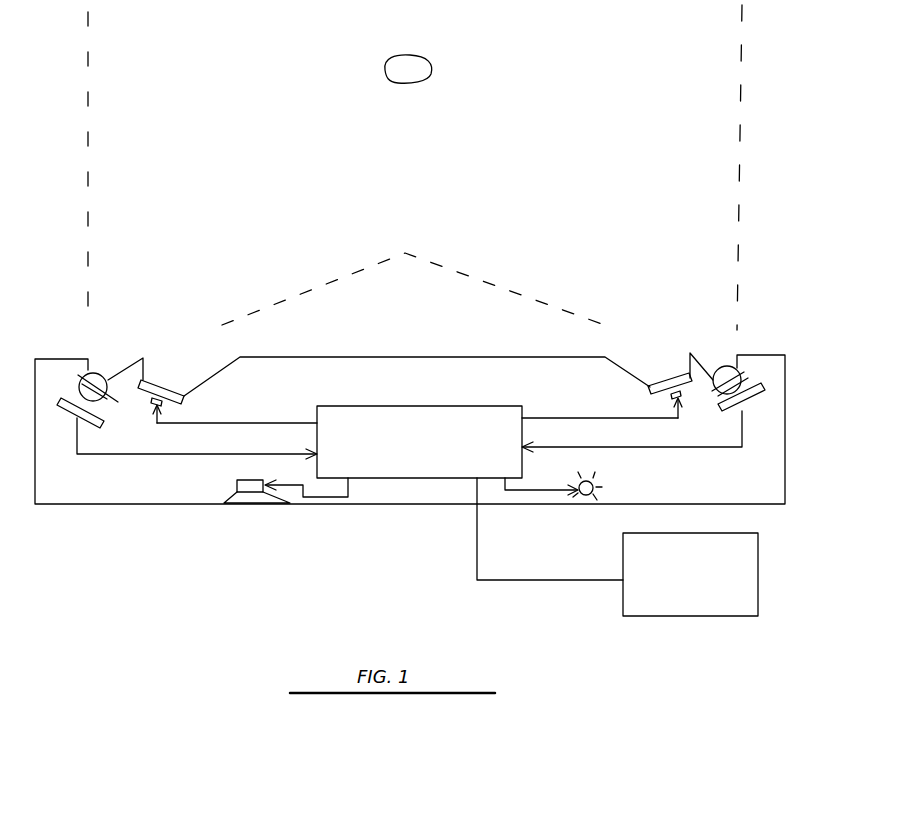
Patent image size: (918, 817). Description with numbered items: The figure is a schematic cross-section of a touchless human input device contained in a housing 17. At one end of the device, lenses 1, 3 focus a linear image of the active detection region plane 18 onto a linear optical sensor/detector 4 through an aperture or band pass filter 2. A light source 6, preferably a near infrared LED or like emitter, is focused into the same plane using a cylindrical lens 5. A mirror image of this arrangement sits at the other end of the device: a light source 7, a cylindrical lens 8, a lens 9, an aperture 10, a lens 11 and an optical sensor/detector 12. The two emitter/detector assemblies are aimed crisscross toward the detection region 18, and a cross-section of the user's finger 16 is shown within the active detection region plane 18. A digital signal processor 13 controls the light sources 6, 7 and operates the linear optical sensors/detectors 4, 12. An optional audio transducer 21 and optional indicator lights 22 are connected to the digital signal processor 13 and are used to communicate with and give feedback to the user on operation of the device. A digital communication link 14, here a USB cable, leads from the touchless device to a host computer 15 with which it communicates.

The lens 1 is at (730, 366).
The aperture or band pass filter 2 is at (748, 375).
The lens 3 is at (750, 381).
The linear optical sensor/detector 4 is at (754, 402).
The cylindrical lens 5 is at (663, 372).
The light source 6 is at (668, 406).
The light source 7 is at (172, 410).
The cylindrical lens 8 is at (164, 380).
The lens 9 is at (93, 372).
The aperture 10 is at (74, 374).
The lens 11 is at (75, 388).
The optical sensor/detector 12 is at (68, 411).
The digital signal processor 13 is at (423, 405).
The digital communication link 14 is at (535, 580).
The host computer 15 is at (697, 617).
The user's finger 16 is at (417, 53).
The housing 17 is at (455, 357).
The active detection region plane 18 is at (742, 135).
The audio transducer 21 is at (262, 506).
The indicator lights 22 is at (588, 497).